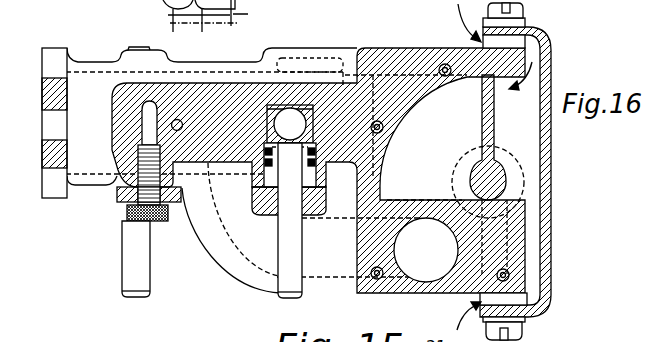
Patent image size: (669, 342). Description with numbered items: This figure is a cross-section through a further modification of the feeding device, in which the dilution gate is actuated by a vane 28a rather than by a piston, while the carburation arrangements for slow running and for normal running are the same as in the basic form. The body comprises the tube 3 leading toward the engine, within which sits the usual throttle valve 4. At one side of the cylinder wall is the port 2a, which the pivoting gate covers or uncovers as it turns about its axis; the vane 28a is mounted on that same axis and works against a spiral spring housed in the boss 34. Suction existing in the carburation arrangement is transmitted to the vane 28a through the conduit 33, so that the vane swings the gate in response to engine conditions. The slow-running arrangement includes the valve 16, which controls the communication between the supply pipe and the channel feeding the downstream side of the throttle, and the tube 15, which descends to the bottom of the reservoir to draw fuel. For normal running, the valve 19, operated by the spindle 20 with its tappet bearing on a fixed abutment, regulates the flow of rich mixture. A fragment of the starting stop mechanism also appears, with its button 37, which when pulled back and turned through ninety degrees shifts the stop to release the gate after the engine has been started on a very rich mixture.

The tube 3 is at (283, 170).
The throttle valve 4 is at (130, 255).
The tube 15 is at (85, 123).
The valve 16 is at (127, 167).
The valve 19 is at (250, 168).
The spindle 20 is at (291, 259).
The port 2a is at (310, 69).
The vane 28a is at (492, 128).
The conduit 33 is at (220, 235).
The boss 34 is at (464, 163).
The button 37 is at (197, 16).